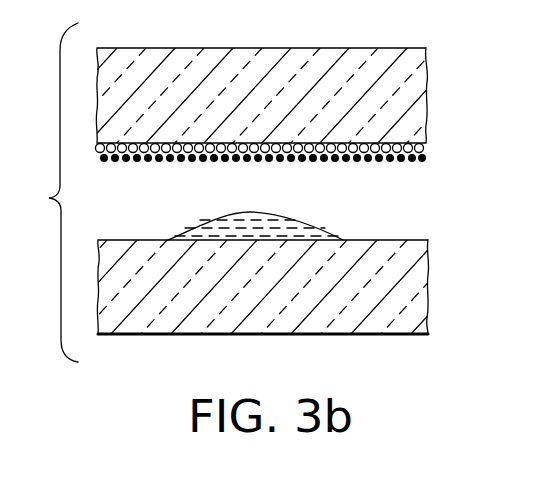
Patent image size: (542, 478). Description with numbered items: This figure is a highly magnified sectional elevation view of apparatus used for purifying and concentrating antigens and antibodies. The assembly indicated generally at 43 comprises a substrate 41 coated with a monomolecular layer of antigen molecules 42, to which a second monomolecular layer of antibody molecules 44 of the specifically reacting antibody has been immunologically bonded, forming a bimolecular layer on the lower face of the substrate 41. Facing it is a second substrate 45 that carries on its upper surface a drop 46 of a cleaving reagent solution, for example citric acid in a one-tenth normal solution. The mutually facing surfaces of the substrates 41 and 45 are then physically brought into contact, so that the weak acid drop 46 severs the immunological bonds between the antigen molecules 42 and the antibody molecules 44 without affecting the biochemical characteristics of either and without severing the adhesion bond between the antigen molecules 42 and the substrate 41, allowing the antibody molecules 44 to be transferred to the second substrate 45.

The substrate 41 is at (102, 103).
The antigen molecules 42 is at (97, 149).
The substrate with antigen layer and bonded antibody layer 43 is at (48, 197).
The antibody molecules 44 is at (192, 160).
The second substrate 45 is at (111, 318).
The drop of cleaving reagent solution 46 is at (288, 228).